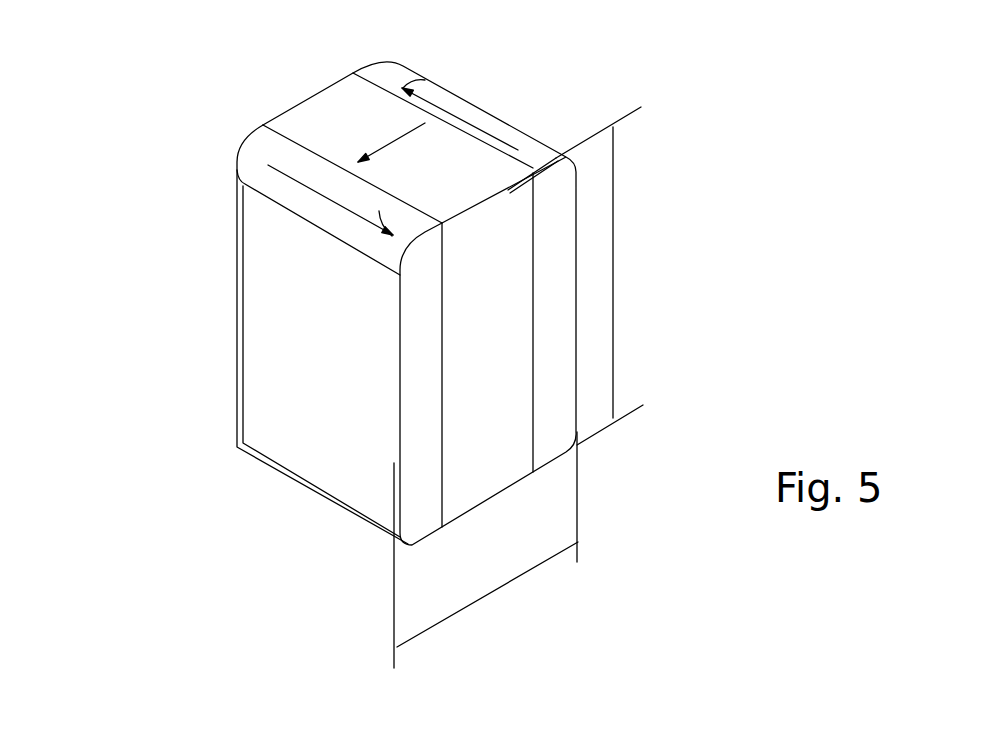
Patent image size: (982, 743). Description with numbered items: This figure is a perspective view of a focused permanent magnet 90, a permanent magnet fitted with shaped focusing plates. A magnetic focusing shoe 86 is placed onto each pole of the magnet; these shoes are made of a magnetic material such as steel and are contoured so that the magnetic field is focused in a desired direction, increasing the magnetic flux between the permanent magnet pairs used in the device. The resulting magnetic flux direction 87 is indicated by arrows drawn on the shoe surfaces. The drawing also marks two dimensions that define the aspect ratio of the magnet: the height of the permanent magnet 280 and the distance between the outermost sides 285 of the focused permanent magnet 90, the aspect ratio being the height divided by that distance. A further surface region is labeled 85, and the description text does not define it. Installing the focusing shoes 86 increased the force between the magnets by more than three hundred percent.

The focused permanent magnet 90 is at (162, 100).
The top surface 85 is at (345, 110).
The magnetic focusing shoe 86 is at (518, 129).
The magnetic flux direction 87 is at (452, 105).
The height of the permanent magnet 280 is at (622, 267).
The distance between the outermost sides 285 is at (488, 602).